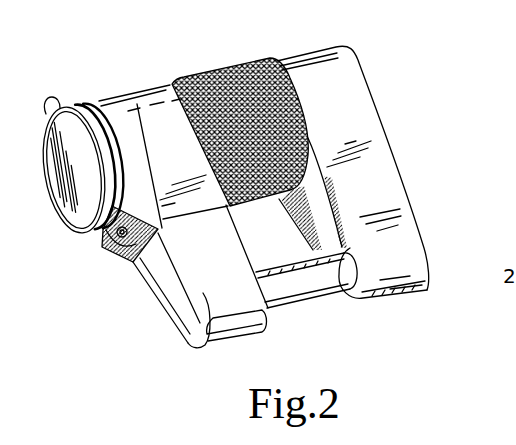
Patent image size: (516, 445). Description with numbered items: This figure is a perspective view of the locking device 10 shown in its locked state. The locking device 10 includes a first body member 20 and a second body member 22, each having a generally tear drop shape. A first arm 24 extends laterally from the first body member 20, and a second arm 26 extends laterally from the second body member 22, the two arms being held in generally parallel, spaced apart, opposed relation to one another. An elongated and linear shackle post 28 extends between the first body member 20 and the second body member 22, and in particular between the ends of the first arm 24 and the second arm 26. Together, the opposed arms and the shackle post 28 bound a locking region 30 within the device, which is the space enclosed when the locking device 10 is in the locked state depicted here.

The locking device 10 is at (410, 47).
The first body member 20 is at (148, 112).
The second body member 22 is at (367, 117).
The first arm 24 is at (200, 268).
The second arm 26 is at (390, 197).
The shackle post 28 is at (300, 293).
The locking region 30 is at (258, 248).